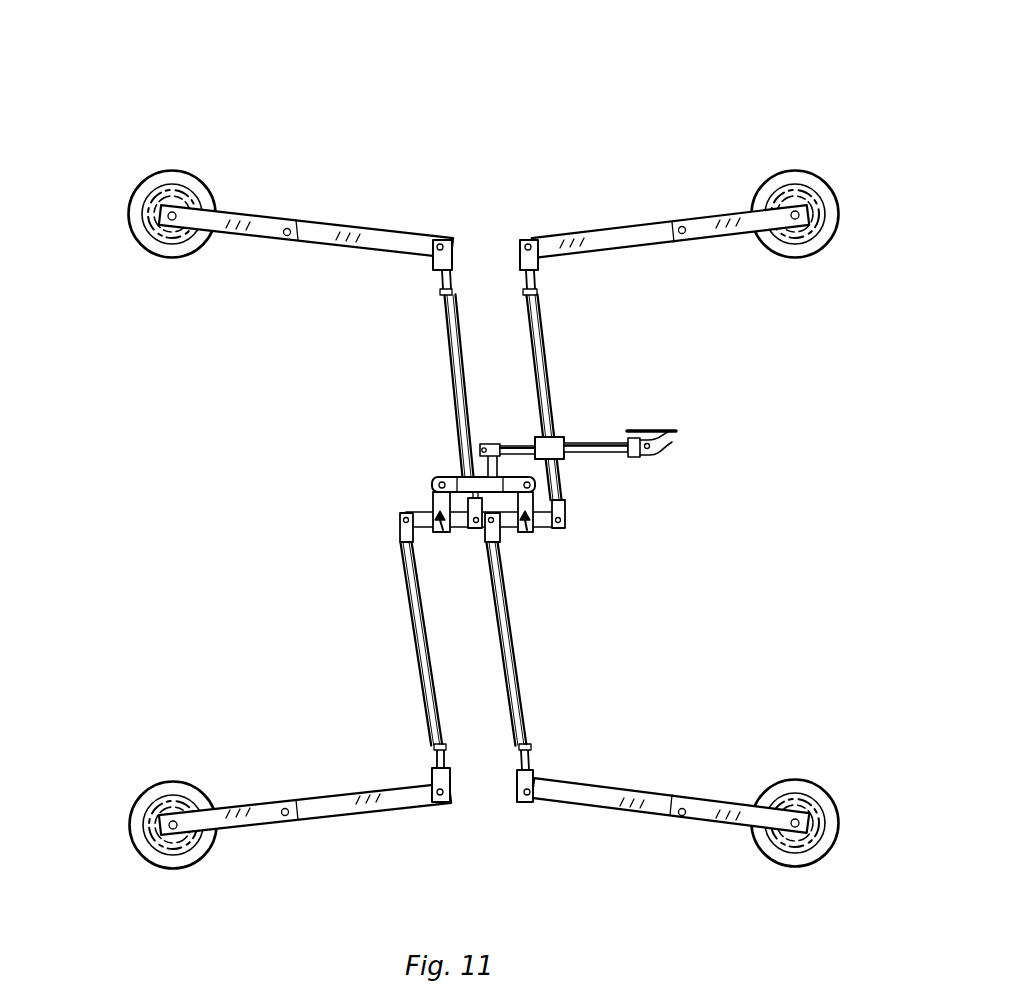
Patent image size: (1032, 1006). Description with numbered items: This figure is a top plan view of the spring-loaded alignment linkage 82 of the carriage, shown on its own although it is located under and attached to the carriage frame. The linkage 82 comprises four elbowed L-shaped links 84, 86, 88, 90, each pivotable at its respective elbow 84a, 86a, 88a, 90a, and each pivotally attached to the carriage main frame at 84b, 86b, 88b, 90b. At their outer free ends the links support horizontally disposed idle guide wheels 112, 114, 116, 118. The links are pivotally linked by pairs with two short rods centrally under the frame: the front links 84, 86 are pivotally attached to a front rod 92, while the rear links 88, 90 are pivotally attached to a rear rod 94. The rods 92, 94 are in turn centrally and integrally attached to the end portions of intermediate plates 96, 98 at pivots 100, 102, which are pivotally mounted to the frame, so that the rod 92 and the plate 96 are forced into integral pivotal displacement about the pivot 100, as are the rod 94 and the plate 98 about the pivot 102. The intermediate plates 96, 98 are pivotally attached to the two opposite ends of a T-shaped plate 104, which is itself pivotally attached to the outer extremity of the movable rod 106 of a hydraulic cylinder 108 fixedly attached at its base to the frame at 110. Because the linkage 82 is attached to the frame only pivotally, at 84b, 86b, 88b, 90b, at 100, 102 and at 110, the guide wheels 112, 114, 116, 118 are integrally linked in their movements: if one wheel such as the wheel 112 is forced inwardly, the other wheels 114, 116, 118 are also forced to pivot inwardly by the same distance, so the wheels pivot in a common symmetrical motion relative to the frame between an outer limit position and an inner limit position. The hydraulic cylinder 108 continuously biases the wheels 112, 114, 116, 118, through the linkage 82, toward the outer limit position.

The spring-loaded linkage 82 is at (518, 105).
The front L-shaped link 84 is at (306, 272).
The elbow of link 84 84a is at (449, 238).
The pivot attachment of link 84 84b is at (288, 228).
The front L-shaped link 86 is at (305, 783).
The elbow of link 86 86a is at (452, 806).
The pivot attachment of link 86 86b is at (287, 816).
The rear L-shaped link 88 is at (671, 809).
The elbow of link 88 88a is at (530, 806).
The pivot attachment of link 88 88b is at (683, 816).
The rear L-shaped link 90 is at (670, 278).
The elbow of link 90 90a is at (521, 238).
The pivot attachment of link 90 90b is at (682, 233).
The front rod 92 is at (420, 515).
The rear rod 94 is at (548, 528).
The intermediate plate 96 is at (432, 496).
The intermediate plate 98 is at (561, 488).
The pivot 100 is at (448, 533).
The pivot 102 is at (526, 533).
The T-shaped plate 104 is at (456, 477).
The movable rod 106 is at (466, 435).
The hydraulic cylinder 108 is at (598, 437).
The cylinder base attachment 110 is at (660, 432).
The idle guide wheel 112 is at (150, 253).
The idle guide wheel 114 is at (148, 868).
The idle guide wheel 116 is at (838, 810).
The idle guide wheel 118 is at (818, 190).